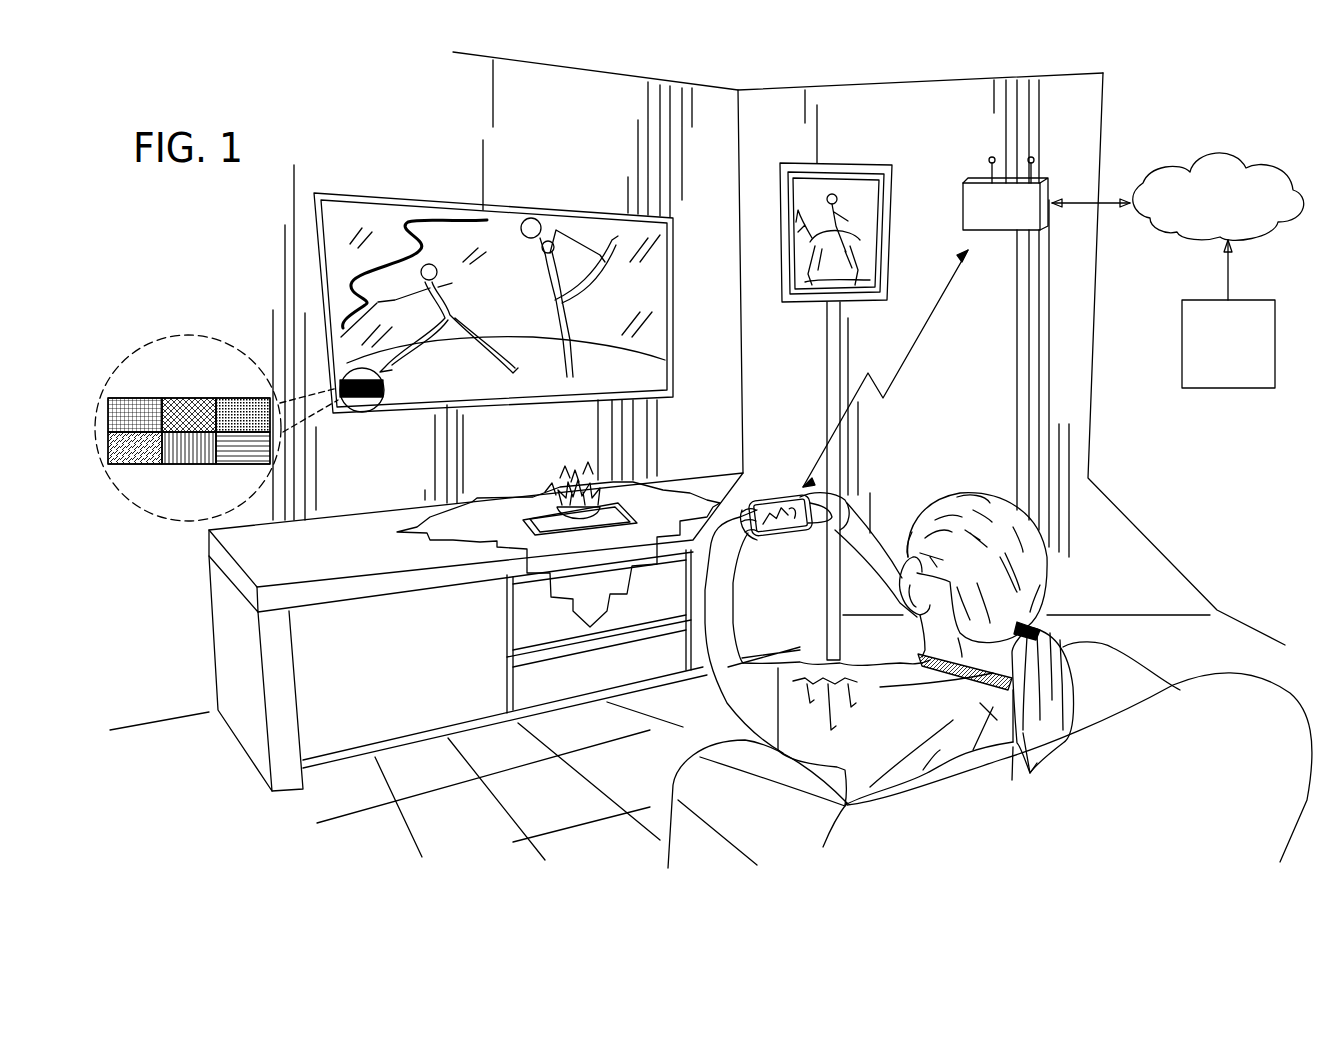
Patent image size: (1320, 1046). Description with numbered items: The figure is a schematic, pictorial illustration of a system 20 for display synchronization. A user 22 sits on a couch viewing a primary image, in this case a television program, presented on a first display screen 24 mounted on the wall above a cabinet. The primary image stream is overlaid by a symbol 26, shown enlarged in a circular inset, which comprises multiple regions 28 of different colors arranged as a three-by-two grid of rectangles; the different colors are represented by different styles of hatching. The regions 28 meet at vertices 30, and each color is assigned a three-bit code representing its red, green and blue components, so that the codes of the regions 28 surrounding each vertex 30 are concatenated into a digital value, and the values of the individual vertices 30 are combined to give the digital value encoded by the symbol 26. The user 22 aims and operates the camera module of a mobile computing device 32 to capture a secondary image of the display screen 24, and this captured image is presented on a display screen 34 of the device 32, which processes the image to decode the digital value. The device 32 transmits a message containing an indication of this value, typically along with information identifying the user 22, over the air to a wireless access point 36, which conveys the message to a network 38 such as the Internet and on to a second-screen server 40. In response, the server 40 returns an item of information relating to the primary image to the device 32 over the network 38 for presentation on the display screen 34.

The system 20 is at (388, 120).
The user 22 is at (1067, 555).
The first display screen 24 is at (362, 213).
The symbol 26 is at (372, 408).
The regions 28 is at (188, 428).
The vertices 30 is at (162, 430).
The mobile computing device 32 is at (770, 493).
The display screen 34 is at (790, 536).
The wireless access point 36 is at (1050, 192).
The network 38 is at (1157, 228).
The second-screen server 40 is at (1182, 346).